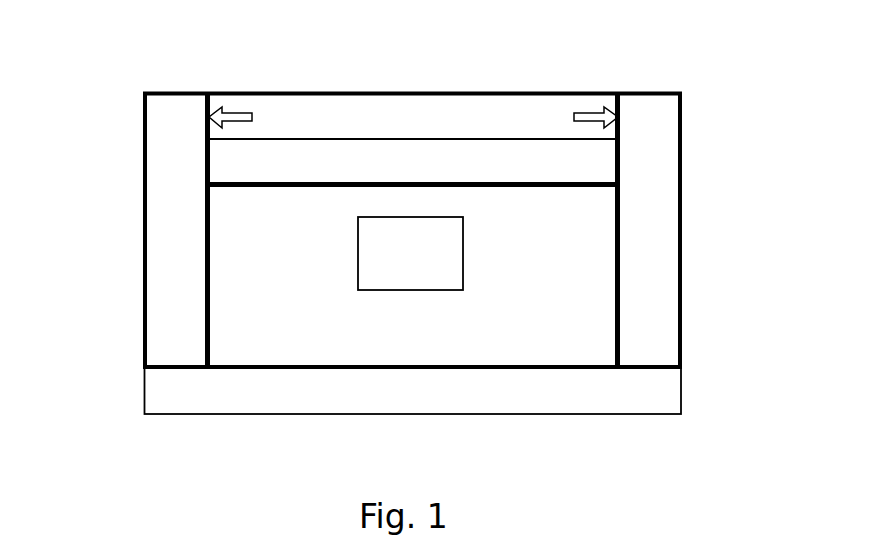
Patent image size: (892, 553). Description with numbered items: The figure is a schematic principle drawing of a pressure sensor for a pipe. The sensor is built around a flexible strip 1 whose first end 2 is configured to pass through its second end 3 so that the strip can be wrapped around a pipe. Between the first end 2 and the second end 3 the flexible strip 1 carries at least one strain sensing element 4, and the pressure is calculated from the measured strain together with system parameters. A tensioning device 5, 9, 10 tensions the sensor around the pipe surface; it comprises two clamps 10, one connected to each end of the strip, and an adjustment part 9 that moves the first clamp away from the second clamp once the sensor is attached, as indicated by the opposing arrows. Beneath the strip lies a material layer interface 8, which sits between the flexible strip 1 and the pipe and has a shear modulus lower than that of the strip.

The flexible strip 1 is at (543, 352).
The first end 2 is at (143, 290).
The second end 3 is at (682, 213).
The strain sensing element 4 is at (405, 222).
The tensioning device 5 is at (448, 102).
The adjustment part 9 is at (448, 102).
The clamps 10 is at (530, 103).
The material layer interface 8 is at (423, 385).